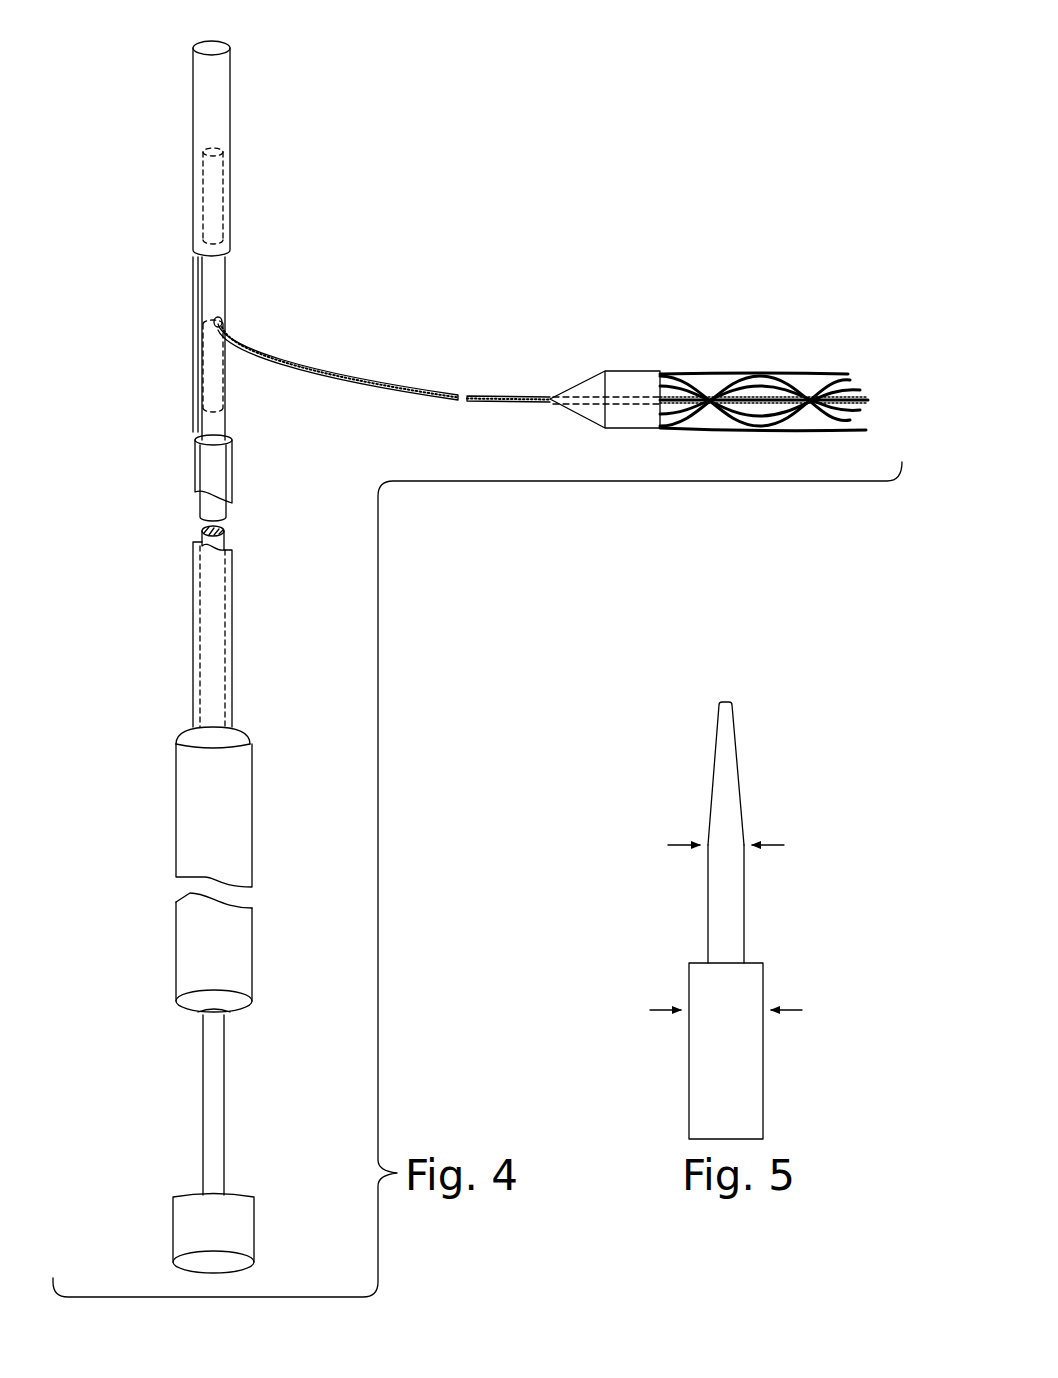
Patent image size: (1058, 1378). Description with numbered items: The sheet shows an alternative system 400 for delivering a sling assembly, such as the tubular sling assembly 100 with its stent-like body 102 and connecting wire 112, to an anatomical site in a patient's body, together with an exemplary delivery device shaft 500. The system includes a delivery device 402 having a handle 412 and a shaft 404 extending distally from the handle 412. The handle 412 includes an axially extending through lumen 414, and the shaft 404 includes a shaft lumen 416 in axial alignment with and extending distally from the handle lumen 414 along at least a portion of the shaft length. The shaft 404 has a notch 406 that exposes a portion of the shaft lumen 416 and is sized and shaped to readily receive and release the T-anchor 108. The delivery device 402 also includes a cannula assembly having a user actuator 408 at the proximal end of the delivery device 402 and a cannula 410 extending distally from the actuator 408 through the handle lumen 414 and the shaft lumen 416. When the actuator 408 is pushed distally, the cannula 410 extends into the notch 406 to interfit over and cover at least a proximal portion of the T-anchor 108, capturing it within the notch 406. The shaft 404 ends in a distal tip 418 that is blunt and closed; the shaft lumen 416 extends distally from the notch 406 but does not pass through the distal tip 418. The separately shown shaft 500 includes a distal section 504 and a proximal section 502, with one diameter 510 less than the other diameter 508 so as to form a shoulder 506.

In FIG. 4, the tubular sling assembly 100 is at (700, 350).
In FIG. 4, the stent 102 is at (750, 375).
In FIG. 4, the T-anchor 108 is at (215, 283).
In FIG. 4, the wire 112 is at (378, 386).
In FIG. 4, the system 400 is at (438, 207).
In FIG. 4, the delivery device 402 is at (250, 709).
In FIG. 4, the shaft 404 is at (198, 565).
In FIG. 4, the notch 406 is at (197, 300).
In FIG. 4, the user actuator 408 is at (187, 1222).
In FIG. 4, the cannula 410 is at (208, 421).
In FIG. 4, the handle 412 is at (192, 778).
In FIG. 4, the handle lumen 414 is at (192, 943).
In FIG. 4, the shaft lumen 416 is at (198, 620).
In FIG. 4, the distal tip 418 is at (214, 47).
In FIG. 5, the shaft 500 is at (770, 730).
In FIG. 5, the proximal section 502 is at (764, 1105).
In FIG. 5, the distal section 504 is at (740, 778).
In FIG. 5, the shoulder 506 is at (752, 963).
In FIG. 5, the diameter 508 is at (778, 1013).
In FIG. 5, the diameter 510 is at (773, 848).